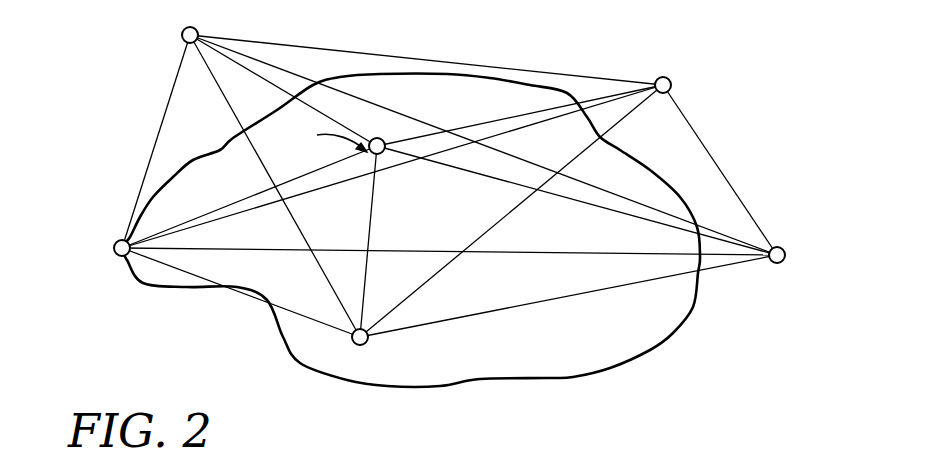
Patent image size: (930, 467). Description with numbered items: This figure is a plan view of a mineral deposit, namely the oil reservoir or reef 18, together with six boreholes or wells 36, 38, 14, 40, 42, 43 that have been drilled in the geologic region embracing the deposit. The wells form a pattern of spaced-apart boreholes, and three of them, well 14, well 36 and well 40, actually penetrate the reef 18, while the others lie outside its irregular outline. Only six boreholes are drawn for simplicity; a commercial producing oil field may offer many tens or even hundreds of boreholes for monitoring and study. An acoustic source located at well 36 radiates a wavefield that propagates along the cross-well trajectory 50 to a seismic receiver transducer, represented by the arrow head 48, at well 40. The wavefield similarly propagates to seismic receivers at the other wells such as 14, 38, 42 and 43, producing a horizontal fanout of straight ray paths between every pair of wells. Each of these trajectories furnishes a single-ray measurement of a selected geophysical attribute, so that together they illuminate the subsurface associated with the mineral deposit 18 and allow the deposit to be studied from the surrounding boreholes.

The borehole 14 is at (368, 343).
The oil reservoir 18 is at (650, 350).
The well 36 is at (115, 243).
The well 38 is at (183, 27).
The well 40 is at (379, 138).
The well 42 is at (785, 255).
The well 43 is at (670, 78).
The arrow head 48 is at (324, 140).
The cross-well trajectory 50 is at (258, 192).